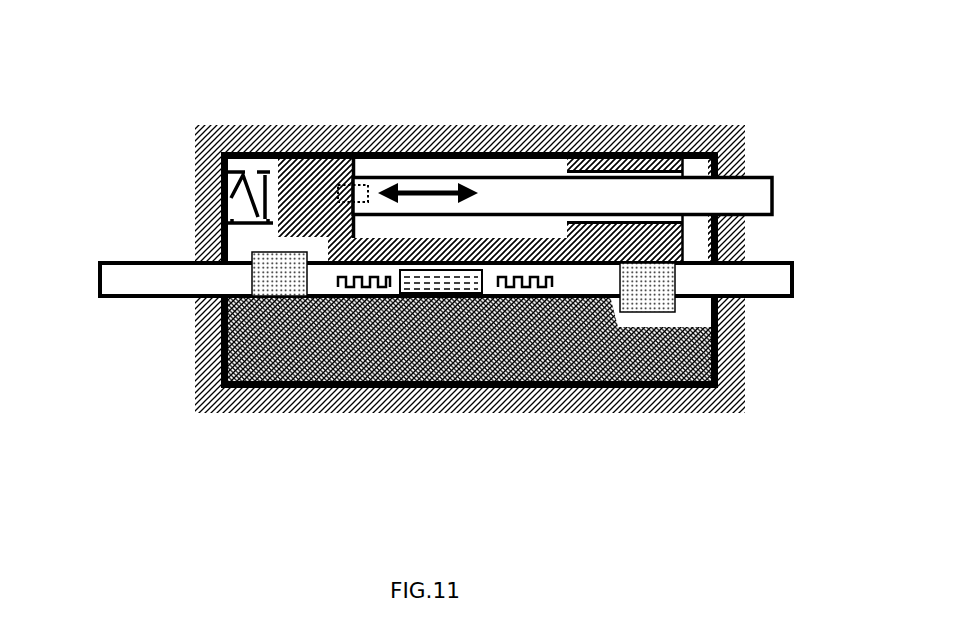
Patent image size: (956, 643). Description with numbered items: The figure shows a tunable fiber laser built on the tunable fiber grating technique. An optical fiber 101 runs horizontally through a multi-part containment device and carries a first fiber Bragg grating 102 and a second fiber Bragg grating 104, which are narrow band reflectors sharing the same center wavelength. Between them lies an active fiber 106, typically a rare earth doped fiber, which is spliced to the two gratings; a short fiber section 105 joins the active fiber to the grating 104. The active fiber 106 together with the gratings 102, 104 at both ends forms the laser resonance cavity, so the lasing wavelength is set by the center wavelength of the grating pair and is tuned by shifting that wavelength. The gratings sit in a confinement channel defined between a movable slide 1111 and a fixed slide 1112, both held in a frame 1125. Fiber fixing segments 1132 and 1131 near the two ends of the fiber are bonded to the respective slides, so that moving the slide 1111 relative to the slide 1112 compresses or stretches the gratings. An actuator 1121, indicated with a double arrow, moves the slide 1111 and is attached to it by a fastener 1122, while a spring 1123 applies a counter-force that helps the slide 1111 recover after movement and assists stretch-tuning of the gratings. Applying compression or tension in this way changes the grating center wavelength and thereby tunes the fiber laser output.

The optical fiber 101 is at (133, 277).
The fiber Bragg grating 102 is at (357, 287).
The fiber Bragg grating 104 is at (525, 295).
The shaft section 105 is at (487, 293).
The active fiber 106 is at (440, 280).
The upper housing body 1111 is at (298, 192).
The lower housing body 1112 is at (373, 355).
The rod 1121 is at (424, 187).
The sensor 1122 is at (353, 193).
The spring 1123 is at (253, 185).
The housing wall 1125 is at (532, 150).
The bearing 1131 is at (645, 285).
The bearing 1132 is at (275, 280).